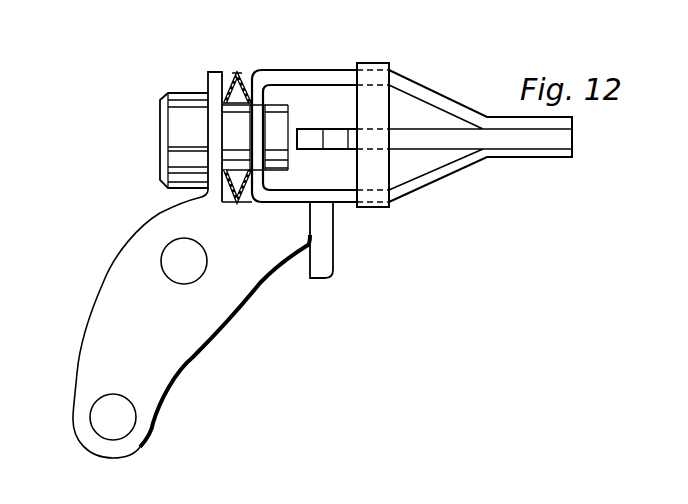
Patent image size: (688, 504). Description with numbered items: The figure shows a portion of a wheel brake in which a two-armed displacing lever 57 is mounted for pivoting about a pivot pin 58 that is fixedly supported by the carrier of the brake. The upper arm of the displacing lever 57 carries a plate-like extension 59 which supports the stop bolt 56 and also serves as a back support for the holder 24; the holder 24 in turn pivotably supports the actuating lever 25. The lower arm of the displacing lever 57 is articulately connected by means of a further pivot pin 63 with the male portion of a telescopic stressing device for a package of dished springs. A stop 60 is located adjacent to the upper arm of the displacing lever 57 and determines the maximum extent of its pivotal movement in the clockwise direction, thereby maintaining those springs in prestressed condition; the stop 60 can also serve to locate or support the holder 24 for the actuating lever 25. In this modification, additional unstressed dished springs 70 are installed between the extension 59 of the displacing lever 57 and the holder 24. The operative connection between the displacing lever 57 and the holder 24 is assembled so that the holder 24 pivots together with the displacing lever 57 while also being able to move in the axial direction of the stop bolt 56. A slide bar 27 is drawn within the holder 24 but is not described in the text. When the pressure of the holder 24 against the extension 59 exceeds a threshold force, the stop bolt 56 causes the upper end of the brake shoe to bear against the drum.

The holder 24 is at (420, 183).
The actuating lever 25 is at (452, 138).
The slide bar 27 is at (338, 133).
The stop bolt 56 is at (180, 132).
The displacing lever 57 is at (113, 318).
The pivot pin 58 is at (178, 250).
The plate-like extension 59 is at (213, 88).
The stop 60 is at (328, 268).
The pivot pin 63 is at (103, 408).
The dished springs 70 is at (245, 198).